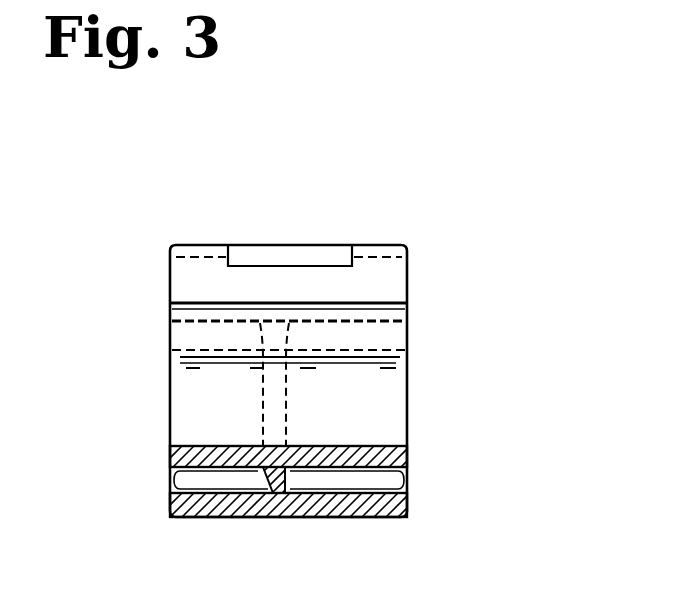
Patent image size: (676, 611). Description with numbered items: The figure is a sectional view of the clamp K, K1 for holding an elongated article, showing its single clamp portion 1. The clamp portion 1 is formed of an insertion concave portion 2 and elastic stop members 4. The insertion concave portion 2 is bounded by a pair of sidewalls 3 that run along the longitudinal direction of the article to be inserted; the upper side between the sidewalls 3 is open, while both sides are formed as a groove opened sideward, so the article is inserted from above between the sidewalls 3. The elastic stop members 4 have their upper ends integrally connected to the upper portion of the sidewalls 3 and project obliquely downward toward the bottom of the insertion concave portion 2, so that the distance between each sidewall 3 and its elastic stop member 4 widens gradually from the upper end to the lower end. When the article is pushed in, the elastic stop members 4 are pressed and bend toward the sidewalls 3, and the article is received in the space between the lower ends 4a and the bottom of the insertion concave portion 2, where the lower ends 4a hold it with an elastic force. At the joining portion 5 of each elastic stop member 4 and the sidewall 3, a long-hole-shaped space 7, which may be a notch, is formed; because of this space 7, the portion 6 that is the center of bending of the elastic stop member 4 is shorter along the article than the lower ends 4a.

The clamp portion 1 is at (287, 309).
The clamp K is at (316, 309).
The clamp K1 is at (316, 309).
The insertion concave portion 2 is at (385, 428).
The sidewalls 3 is at (405, 345).
The elastic stop members 4 is at (278, 214).
The lower ends 4a is at (181, 305).
The joining portion 5 is at (276, 181).
The portion 6 is at (202, 245).
The space 7 is at (283, 262).